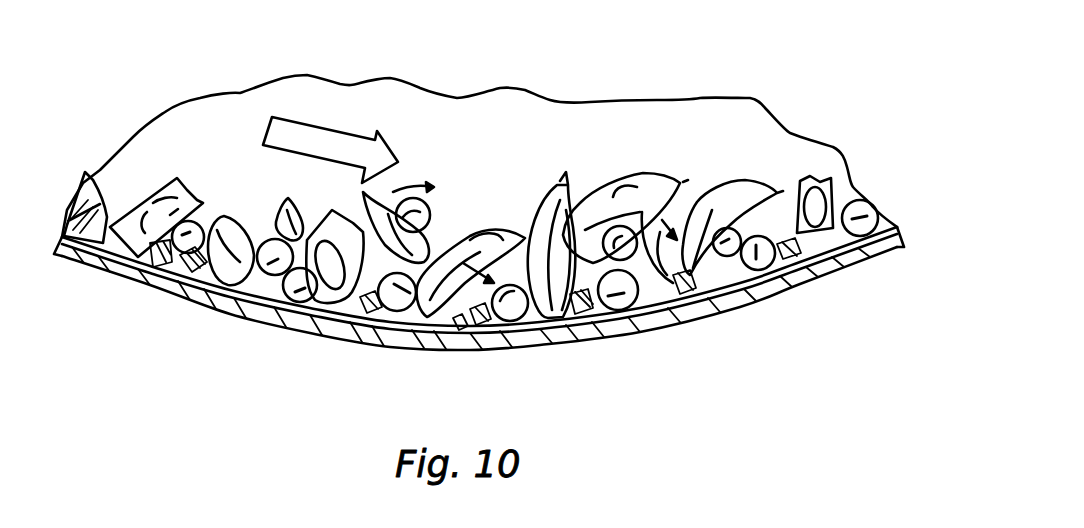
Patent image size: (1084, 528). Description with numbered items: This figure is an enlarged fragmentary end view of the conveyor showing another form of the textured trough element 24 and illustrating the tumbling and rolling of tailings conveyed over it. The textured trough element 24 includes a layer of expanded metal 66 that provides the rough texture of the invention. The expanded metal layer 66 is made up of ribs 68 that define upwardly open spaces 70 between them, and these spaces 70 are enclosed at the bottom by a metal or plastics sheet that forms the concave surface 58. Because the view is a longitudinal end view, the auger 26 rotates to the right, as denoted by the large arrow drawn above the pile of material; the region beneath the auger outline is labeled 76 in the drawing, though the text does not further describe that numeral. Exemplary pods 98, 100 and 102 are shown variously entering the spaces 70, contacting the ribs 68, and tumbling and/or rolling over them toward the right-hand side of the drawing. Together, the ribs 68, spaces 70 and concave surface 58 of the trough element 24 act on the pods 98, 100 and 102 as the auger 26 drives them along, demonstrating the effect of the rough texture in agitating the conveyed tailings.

The textured trough element 24 is at (897, 228).
The auger 26 is at (752, 98).
The concave surface 58 is at (97, 208).
The expanded metal layer 66 is at (827, 263).
The ribs 68 is at (170, 266).
The upwardly open spaces 70 is at (212, 275).
The flow direction 76 is at (503, 119).
The pod 98 is at (483, 215).
The pod 100 is at (380, 203).
The pod 102 is at (627, 173).